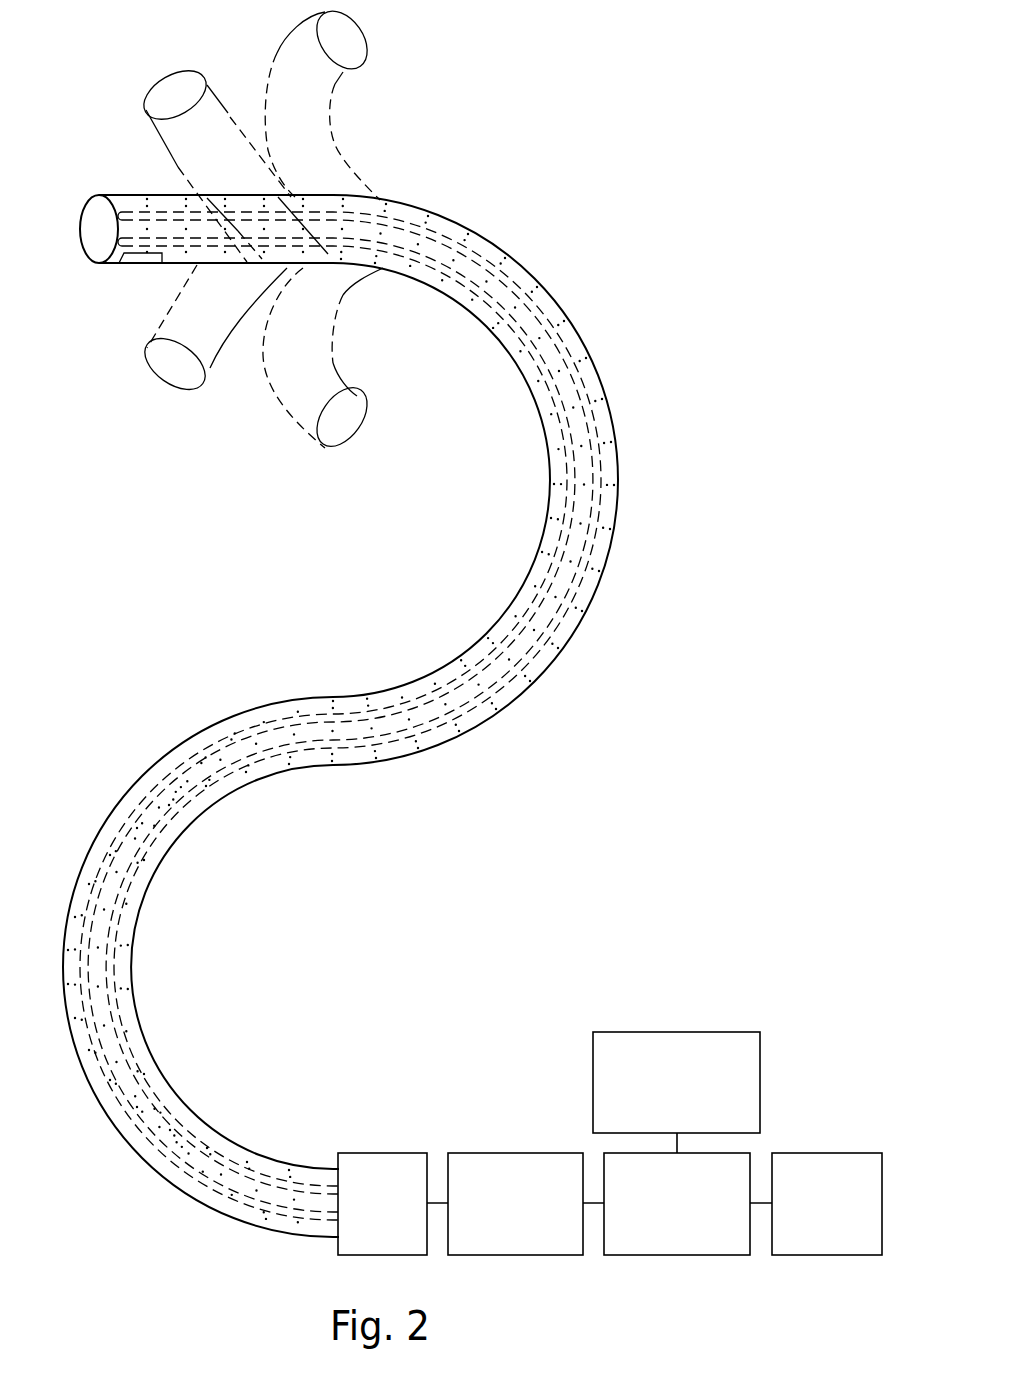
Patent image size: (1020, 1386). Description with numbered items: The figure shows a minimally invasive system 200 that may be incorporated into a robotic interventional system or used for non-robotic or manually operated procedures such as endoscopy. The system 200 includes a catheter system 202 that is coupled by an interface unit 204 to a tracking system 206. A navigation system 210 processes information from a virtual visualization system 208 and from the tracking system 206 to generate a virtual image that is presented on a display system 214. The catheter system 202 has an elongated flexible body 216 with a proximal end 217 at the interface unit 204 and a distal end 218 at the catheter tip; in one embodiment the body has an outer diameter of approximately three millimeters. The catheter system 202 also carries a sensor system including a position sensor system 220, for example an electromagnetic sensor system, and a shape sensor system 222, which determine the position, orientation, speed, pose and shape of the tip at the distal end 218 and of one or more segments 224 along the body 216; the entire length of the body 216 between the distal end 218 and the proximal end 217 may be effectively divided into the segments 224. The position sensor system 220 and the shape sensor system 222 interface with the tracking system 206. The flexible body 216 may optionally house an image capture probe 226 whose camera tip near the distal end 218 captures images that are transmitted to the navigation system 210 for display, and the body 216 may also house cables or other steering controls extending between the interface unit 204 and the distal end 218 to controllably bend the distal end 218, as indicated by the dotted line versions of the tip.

The minimally invasive system 200 is at (582, 181).
The catheter system 202 is at (606, 407).
The interface unit 204 is at (403, 1219).
The tracking system 206 is at (515, 1256).
The virtual visualization system 208 is at (761, 1080).
The navigation system 210 is at (677, 1256).
The display system 214 is at (827, 1256).
The elongated flexible body 216 is at (258, 703).
The proximal end 217 is at (305, 1249).
The distal end 218 is at (108, 188).
The position sensor system 220 is at (137, 266).
The shape sensor system 222 is at (604, 473).
The segments 224 is at (569, 638).
The image capture probe 226 is at (553, 510).